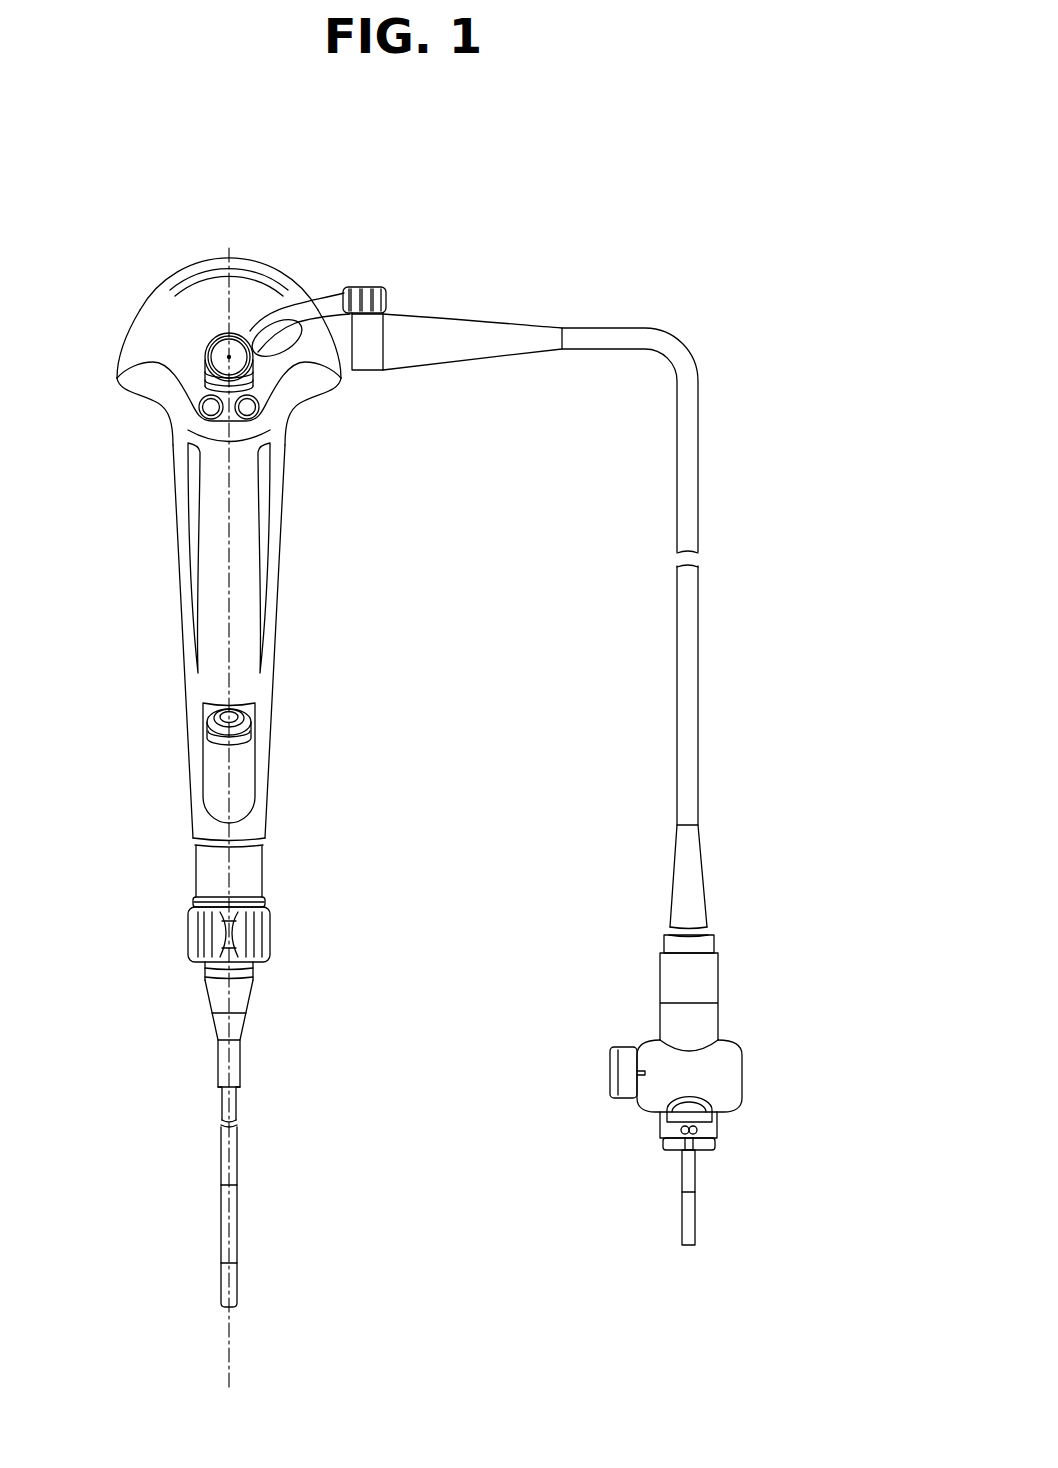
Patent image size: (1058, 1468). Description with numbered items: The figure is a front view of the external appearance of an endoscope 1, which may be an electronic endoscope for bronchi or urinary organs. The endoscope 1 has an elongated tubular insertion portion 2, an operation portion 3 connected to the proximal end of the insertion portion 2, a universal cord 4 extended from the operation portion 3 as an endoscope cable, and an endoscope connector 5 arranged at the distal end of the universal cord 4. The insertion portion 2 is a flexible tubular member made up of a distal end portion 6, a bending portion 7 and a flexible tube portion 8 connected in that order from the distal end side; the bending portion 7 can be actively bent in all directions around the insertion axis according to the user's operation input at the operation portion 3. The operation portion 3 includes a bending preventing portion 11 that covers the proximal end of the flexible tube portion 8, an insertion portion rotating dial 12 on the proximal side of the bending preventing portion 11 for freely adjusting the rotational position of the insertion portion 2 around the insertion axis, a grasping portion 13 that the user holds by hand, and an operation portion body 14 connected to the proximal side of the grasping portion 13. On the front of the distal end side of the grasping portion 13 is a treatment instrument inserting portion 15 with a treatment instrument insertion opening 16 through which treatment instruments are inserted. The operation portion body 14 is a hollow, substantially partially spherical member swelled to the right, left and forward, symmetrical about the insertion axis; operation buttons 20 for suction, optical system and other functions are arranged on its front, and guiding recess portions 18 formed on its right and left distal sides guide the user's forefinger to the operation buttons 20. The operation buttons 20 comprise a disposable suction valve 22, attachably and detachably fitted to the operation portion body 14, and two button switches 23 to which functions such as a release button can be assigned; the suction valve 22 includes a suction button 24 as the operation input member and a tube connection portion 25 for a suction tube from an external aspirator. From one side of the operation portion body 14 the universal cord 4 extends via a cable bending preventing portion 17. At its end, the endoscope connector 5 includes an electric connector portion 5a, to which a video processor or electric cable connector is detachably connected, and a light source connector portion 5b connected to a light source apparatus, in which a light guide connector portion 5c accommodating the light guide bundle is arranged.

The endoscope 1 is at (124, 201).
The insertion portion 2 is at (293, 1138).
The operation portion 3 is at (326, 533).
The universal cord 4 is at (603, 327).
The endoscope connector 5 is at (644, 1010).
The electric connector portion 5a is at (610, 1047).
The light source connector portion 5b is at (648, 1122).
The light guide connector portion 5c is at (696, 1213).
The distal end portion 6 is at (238, 1287).
The bending portion 7 is at (238, 1226).
The flexible tube portion 8 is at (238, 1153).
The bending preventing portion 11 is at (242, 1027).
The insertion portion rotating dial 12 is at (270, 930).
The grasping portion 13 is at (280, 600).
The operation portion body 14 is at (132, 325).
The treatment instrument inserting portion 15 is at (254, 767).
The treatment instrument insertion opening 16 is at (251, 721).
The cable bending preventing portion 17 is at (462, 322).
The guiding recess portions 18 is at (153, 392).
The operation buttons 20 is at (318, 226).
The suction valve 22 is at (236, 332).
The button switches 23 is at (204, 392).
The suction button 24 is at (220, 336).
The tube connection portion 25 is at (338, 290).